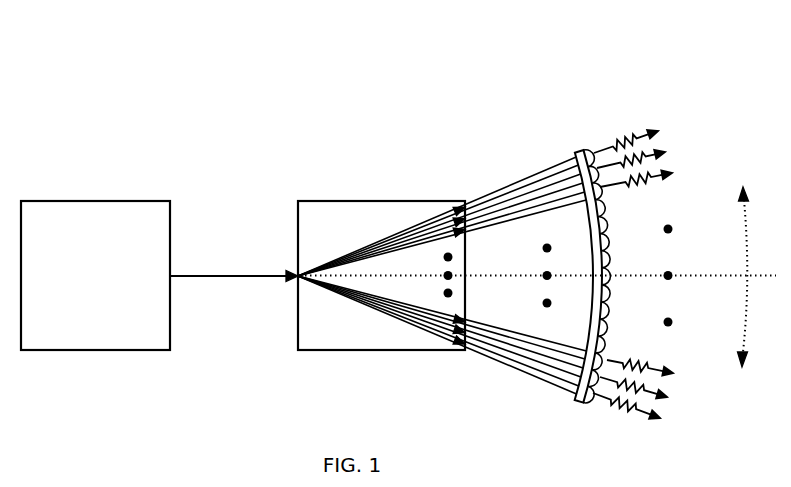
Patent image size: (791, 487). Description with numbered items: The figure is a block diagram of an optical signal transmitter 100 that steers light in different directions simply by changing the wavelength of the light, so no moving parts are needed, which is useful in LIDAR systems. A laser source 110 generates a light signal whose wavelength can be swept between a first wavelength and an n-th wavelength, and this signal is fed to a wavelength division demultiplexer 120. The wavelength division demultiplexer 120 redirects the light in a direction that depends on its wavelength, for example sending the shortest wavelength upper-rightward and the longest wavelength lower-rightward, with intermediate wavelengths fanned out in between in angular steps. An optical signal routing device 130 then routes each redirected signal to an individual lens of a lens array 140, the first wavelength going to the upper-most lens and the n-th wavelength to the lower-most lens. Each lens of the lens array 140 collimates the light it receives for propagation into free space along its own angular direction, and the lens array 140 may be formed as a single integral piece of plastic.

The optical signal transmitter 100 is at (317, 92).
The laser source 110 is at (79, 318).
The wavelength division demultiplexer (WD-Demux) 120 is at (345, 229).
The optical signal routing device 130 is at (518, 286).
The lens array 140 is at (575, 152).